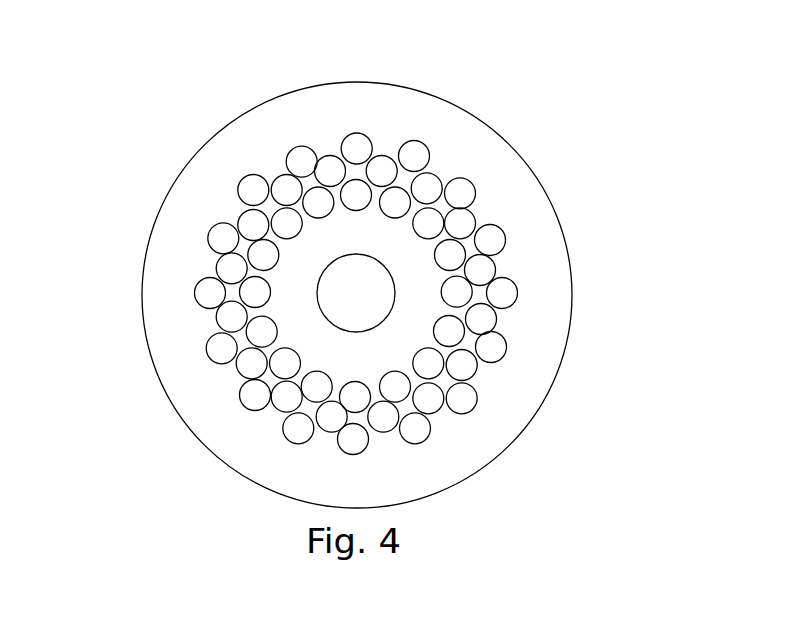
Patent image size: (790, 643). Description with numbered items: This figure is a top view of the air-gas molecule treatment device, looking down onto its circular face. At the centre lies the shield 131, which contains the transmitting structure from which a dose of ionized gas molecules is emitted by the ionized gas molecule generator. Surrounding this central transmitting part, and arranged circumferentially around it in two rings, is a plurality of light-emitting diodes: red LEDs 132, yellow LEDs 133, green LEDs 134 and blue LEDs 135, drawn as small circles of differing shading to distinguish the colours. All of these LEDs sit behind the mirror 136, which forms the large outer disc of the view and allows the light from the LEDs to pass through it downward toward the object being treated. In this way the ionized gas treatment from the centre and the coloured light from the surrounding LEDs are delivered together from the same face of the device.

The shield 131 is at (347, 289).
The red LEDs 132 is at (362, 145).
The yellow LEDs 133 is at (416, 153).
The green LEDs 134 is at (303, 155).
The blue LEDs 135 is at (462, 192).
The mirror 136 is at (237, 117).